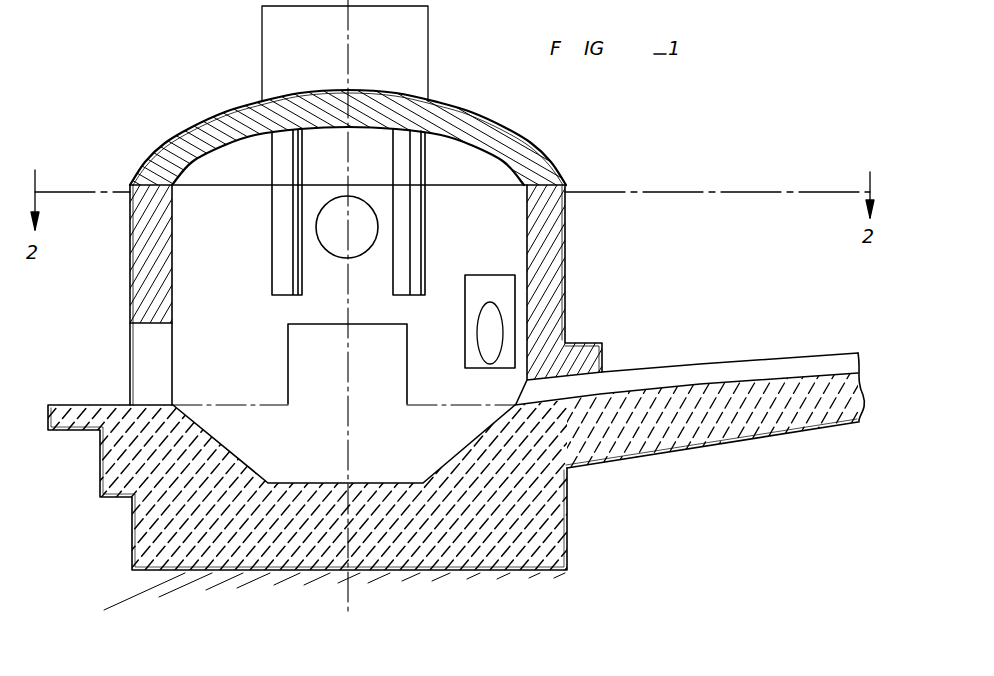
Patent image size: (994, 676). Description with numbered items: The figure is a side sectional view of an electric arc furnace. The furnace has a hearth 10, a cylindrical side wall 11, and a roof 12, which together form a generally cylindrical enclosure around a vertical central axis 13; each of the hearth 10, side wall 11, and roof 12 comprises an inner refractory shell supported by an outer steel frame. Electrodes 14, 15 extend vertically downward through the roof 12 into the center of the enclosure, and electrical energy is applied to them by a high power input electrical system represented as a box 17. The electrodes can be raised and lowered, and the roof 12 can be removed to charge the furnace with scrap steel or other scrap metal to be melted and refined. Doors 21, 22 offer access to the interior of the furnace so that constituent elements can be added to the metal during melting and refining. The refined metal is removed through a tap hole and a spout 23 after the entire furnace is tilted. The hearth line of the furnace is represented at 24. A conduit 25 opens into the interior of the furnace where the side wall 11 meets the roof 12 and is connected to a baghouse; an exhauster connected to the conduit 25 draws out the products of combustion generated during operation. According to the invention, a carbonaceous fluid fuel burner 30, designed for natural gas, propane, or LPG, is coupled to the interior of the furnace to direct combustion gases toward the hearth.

The hearth 10 is at (224, 438).
The cylindrical side wall 11 is at (172, 288).
The roof 12 is at (210, 158).
The vertical central axis 13 is at (349, 613).
The electrode 14 is at (272, 233).
The electrode 15 is at (425, 221).
The high power input electrical system 17 is at (262, 16).
The door 21 is at (130, 356).
The door 22 is at (381, 324).
The spout 23 is at (672, 367).
The hearth line 24 is at (452, 406).
The conduit 25 is at (330, 196).
The carbonaceous fluid fuel burner 30 is at (490, 283).